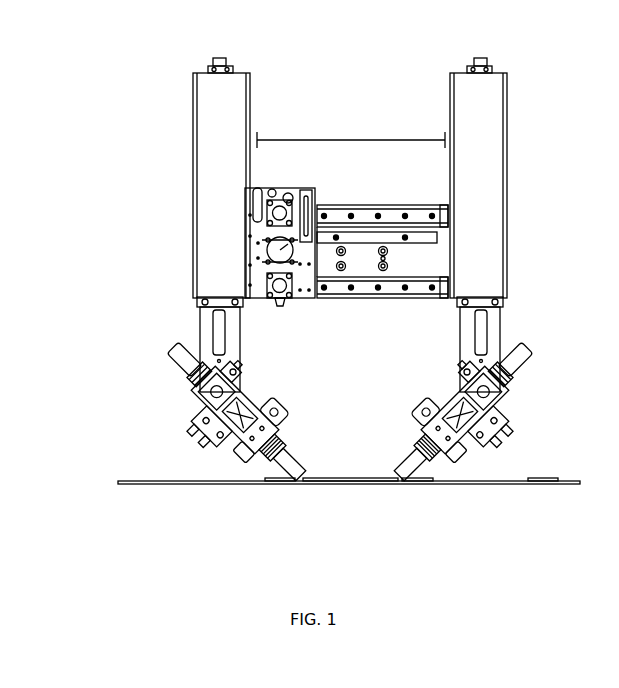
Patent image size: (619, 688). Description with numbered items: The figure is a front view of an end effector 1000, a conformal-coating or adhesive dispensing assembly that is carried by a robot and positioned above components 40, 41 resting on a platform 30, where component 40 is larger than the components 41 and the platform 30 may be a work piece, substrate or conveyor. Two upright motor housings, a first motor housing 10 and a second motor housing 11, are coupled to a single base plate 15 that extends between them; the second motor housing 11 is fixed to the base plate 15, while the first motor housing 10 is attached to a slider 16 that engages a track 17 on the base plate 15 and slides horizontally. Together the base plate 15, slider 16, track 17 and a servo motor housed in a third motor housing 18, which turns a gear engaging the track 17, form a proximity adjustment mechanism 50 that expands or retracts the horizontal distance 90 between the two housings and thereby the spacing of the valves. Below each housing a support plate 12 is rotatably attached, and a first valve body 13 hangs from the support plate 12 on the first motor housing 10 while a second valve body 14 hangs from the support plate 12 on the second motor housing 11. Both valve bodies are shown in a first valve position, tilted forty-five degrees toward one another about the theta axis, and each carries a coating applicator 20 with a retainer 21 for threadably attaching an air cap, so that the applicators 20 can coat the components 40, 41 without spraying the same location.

The end effector 1000 is at (537, 70).
The first motor housing 10 is at (200, 155).
The second motor housing 11 is at (497, 148).
The support plate 12 is at (205, 332).
The first valve body 13 is at (222, 400).
The second valve body 14 is at (470, 402).
The base plate 15 is at (418, 255).
The slider 16 is at (312, 285).
The track 17 is at (392, 287).
The third motor housing 18 is at (280, 248).
The coating applicator 20 is at (283, 462).
The retainer 21 is at (283, 445).
The platform 30 is at (118, 480).
The component 40 is at (318, 480).
The components 41 is at (287, 486).
The proximity adjustment mechanism 50 is at (432, 168).
The horizontal distance 90 is at (297, 138).